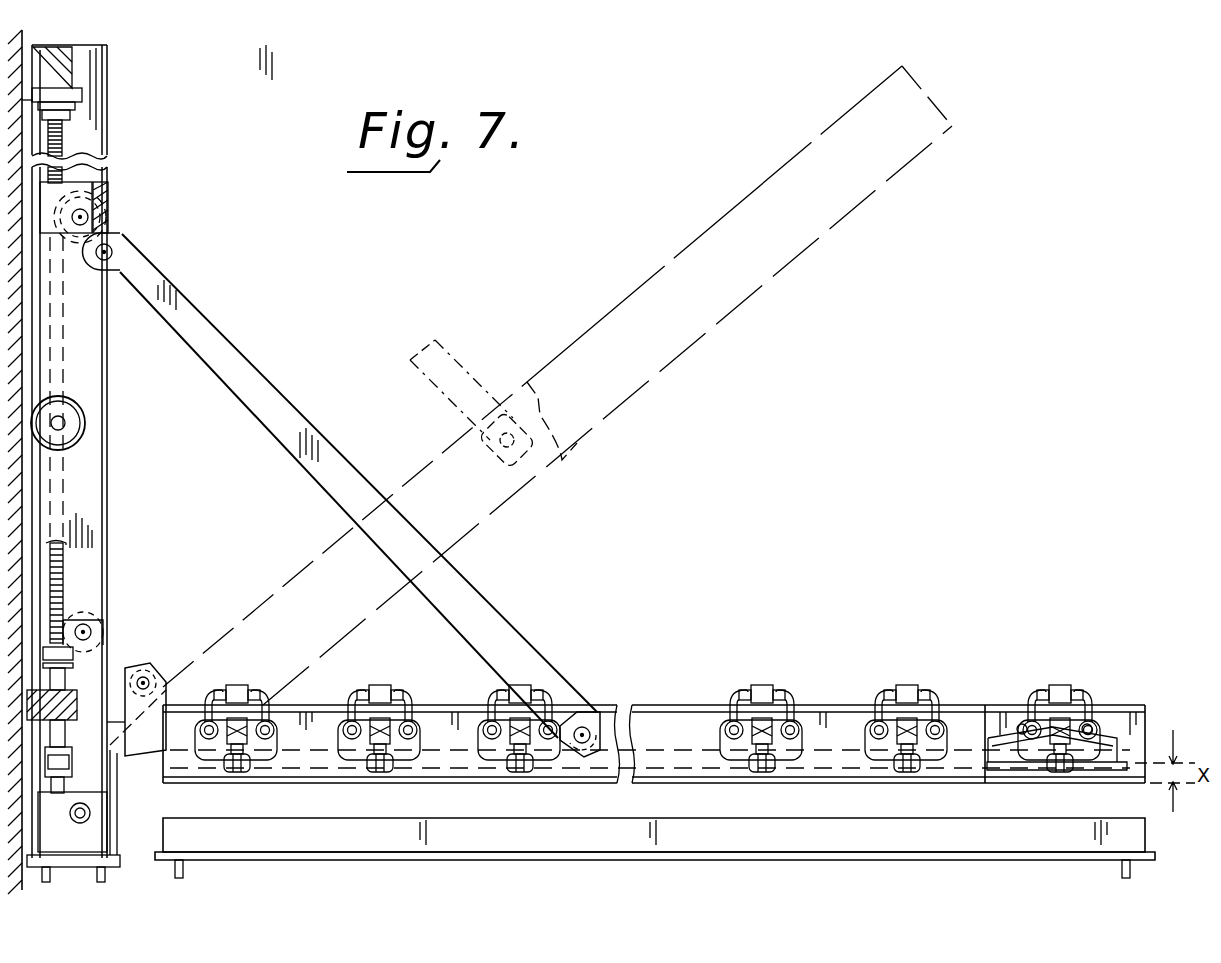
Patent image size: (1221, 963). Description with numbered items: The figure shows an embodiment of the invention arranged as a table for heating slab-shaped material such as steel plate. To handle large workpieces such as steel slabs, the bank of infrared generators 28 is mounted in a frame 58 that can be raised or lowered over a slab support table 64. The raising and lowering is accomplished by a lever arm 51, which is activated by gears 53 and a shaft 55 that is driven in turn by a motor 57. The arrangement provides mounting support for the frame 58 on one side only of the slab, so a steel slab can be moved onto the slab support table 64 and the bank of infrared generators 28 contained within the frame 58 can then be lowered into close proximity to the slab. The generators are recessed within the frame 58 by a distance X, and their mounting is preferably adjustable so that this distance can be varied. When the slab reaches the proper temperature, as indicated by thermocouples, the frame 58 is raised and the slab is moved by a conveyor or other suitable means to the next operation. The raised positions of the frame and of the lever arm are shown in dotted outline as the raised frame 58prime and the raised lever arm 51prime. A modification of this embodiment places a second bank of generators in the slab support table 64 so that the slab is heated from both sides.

The infrared generators 28 is at (863, 737).
The lever arm 51 is at (273, 377).
The lever arm in raised position 51prime is at (447, 347).
The gears 53 is at (108, 212).
The shaft 55 is at (65, 580).
The motor 57 is at (93, 803).
The frame 58 is at (962, 708).
The frame in raised position 58prime is at (727, 297).
The slab support table 64 is at (1130, 836).